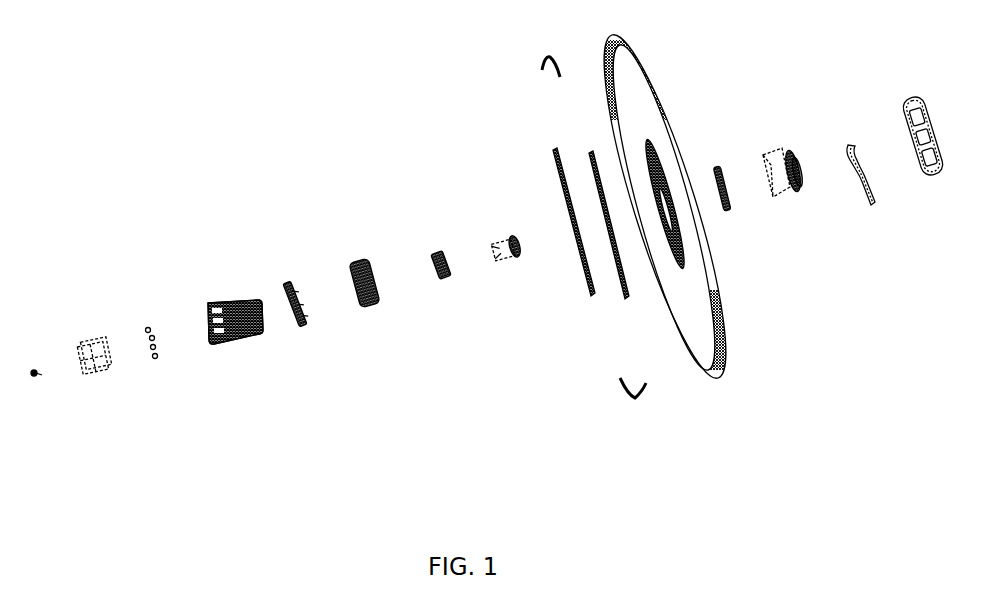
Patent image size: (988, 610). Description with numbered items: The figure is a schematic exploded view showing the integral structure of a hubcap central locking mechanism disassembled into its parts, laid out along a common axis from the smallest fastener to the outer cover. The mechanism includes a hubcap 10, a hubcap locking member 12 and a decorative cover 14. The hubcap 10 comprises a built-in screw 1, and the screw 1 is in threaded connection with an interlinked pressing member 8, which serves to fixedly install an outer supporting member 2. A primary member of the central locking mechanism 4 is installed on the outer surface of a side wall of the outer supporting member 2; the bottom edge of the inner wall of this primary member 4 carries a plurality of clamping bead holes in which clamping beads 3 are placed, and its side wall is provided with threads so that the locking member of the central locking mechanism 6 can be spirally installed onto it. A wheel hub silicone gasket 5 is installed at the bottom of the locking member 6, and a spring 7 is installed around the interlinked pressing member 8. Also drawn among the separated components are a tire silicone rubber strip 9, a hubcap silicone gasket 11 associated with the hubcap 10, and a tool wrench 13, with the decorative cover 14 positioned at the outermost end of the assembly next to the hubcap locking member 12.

The screw 1 is at (35, 371).
The outer supporting member 2 is at (89, 345).
The clamping bead 3 is at (151, 327).
The primary member of central locking module 4 is at (213, 318).
The wheel hub silicone gasket 5 is at (293, 287).
The locking member of central locking mechanism 6 is at (366, 261).
The spring 7 is at (441, 253).
The interlinked pressing member 8 is at (497, 237).
The tire silicone rubber strip 9 is at (570, 216).
The hubcap 10 is at (662, 164).
The hubcap silicone gasket 11 is at (723, 172).
The hubcap locking member 12 is at (779, 153).
The tool wrench 13 is at (851, 149).
The decorative cover 14 is at (920, 100).